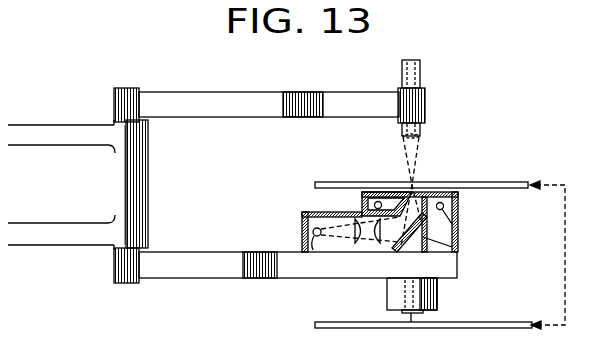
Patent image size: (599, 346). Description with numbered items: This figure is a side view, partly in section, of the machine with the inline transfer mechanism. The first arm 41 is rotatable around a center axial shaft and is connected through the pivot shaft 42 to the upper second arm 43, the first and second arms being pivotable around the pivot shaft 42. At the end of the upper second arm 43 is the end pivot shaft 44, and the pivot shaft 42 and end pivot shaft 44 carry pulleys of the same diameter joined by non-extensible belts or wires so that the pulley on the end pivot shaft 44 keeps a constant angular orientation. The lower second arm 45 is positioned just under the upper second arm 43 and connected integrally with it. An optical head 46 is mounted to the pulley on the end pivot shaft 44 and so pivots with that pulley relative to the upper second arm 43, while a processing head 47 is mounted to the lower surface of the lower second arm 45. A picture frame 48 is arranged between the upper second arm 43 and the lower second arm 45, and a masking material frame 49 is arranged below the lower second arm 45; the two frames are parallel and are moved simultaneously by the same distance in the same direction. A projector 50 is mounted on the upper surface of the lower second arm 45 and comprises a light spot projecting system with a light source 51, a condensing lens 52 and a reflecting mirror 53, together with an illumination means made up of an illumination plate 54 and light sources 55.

The first arm 41 is at (48, 124).
The pivot shaft 42 is at (150, 187).
The upper second arm 43 is at (233, 91).
The end pivot shaft 44 is at (428, 101).
The lower second arm 45 is at (224, 279).
The optical head 46 is at (423, 76).
The processing head 47 is at (438, 296).
The picture frame 48 is at (498, 181).
The masking material frame 49 is at (511, 321).
The projector 50 is at (459, 209).
The light source 51 is at (317, 238).
The lens 52 is at (357, 245).
The mirror 53 is at (459, 249).
The illumination plate 54 is at (440, 191).
The light sources 55 is at (377, 197).